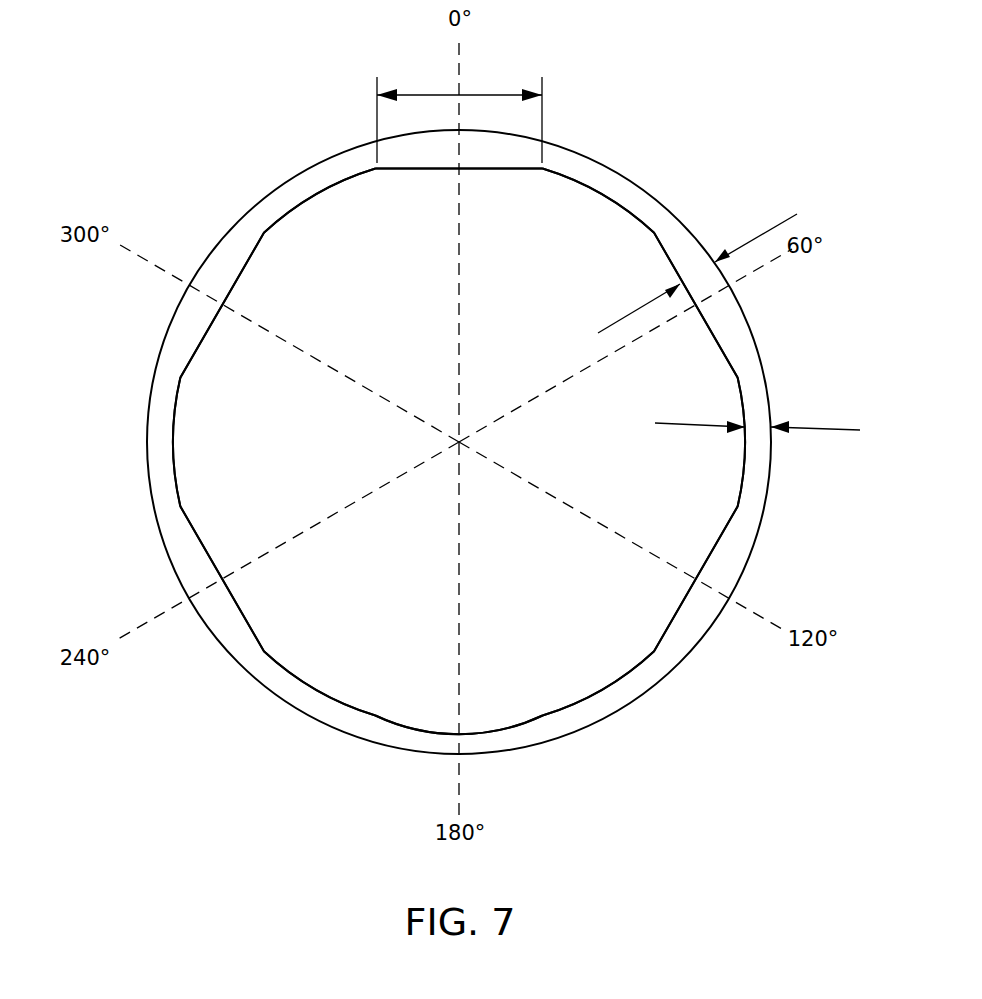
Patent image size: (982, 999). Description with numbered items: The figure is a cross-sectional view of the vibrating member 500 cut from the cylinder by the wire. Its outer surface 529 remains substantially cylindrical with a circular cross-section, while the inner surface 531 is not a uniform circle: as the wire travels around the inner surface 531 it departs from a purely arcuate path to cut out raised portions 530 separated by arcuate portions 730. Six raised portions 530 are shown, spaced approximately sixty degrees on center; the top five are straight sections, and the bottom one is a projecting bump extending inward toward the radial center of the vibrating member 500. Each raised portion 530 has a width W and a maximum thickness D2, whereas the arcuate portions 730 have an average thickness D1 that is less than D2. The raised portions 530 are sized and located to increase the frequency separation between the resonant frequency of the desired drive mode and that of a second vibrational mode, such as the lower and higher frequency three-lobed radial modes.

The vibrating member 500 is at (630, 165).
The outer surface 529 is at (338, 153).
The raised portions 530 is at (511, 171).
The inner surface 531 is at (367, 240).
The arcuate portions 730 is at (297, 210).
The width W is at (481, 95).
The average thickness D1 is at (833, 430).
The maximum thickness D2 is at (757, 235).